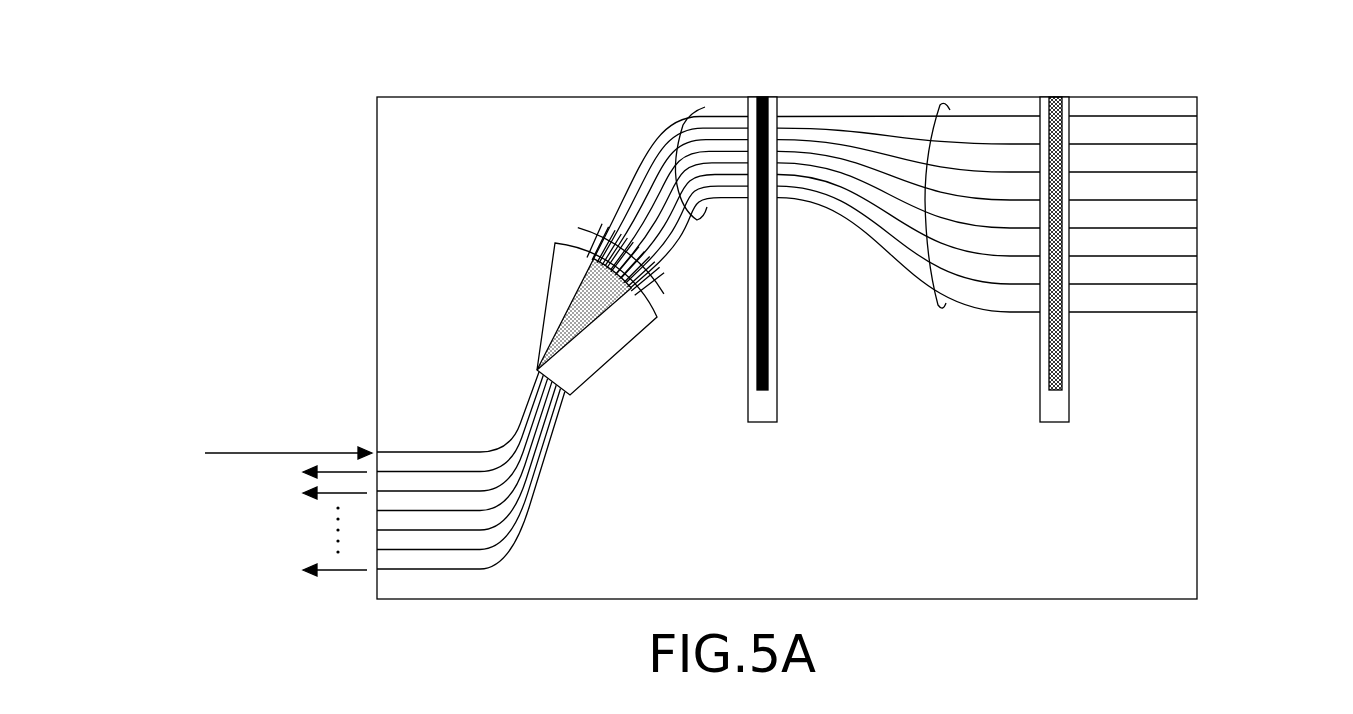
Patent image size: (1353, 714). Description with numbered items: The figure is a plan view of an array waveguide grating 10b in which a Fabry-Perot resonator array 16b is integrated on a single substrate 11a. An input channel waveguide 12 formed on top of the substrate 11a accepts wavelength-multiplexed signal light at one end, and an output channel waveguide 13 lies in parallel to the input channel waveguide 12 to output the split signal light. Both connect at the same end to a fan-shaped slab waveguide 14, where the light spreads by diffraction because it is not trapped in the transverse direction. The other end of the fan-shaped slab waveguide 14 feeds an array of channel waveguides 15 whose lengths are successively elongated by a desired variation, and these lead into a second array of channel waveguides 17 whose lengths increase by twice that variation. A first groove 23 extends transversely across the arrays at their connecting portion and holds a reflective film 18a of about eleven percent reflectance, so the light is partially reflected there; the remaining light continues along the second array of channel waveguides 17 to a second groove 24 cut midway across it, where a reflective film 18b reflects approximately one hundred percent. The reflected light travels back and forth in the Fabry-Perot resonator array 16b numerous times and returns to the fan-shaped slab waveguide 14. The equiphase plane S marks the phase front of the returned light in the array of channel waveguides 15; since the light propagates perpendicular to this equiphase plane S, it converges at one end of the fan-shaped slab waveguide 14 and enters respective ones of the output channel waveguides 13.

The array waveguide grating 10b is at (1222, 131).
The substrate 11a is at (377, 207).
The input channel waveguide 12 is at (415, 452).
The output channel waveguide 13 is at (447, 460).
The fan-shaped slab waveguide 14 is at (553, 257).
The equiphase plane S is at (585, 230).
The array of channel waveguides 15 is at (683, 118).
The Fabry-Perot resonator array 16b is at (1047, 84).
The second array of channel waveguides 17 is at (933, 293).
The reflective film 18a is at (770, 353).
The reflective film 18b is at (1063, 355).
The first groove 23 is at (767, 275).
The second groove 24 is at (1056, 275).